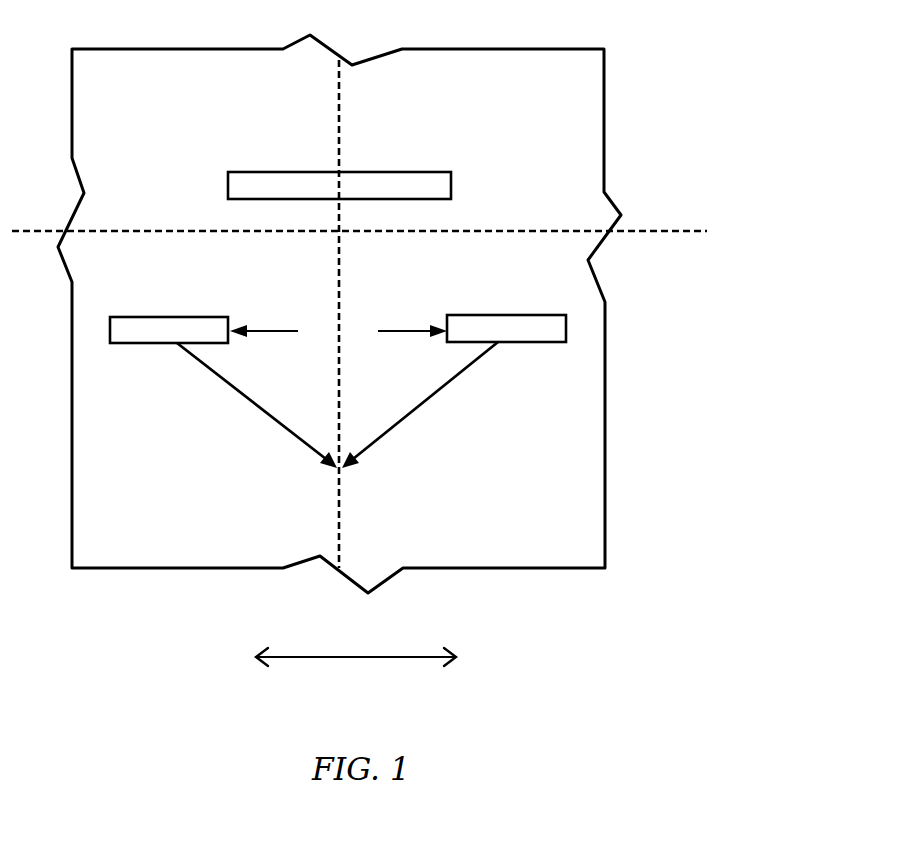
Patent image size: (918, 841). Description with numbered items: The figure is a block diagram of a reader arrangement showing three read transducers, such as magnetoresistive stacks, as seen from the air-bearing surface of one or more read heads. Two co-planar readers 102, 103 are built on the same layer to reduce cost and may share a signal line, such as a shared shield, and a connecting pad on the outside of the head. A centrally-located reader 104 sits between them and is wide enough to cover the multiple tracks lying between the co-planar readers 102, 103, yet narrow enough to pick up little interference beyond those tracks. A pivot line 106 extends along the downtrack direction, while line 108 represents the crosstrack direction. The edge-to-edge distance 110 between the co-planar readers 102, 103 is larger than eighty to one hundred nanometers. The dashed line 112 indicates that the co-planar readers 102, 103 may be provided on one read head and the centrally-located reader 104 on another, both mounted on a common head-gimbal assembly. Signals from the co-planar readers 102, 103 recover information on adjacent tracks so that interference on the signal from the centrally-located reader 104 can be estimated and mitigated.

The co-planar reader 102 is at (162, 315).
The co-planar reader 103 is at (497, 313).
The centrally-located reader 104 is at (265, 170).
The pivot line 106 is at (340, 105).
The crosstrack direction line 108 is at (327, 655).
The edge-to-edge distance 110 is at (338, 329).
The dashed line 112 is at (682, 230).